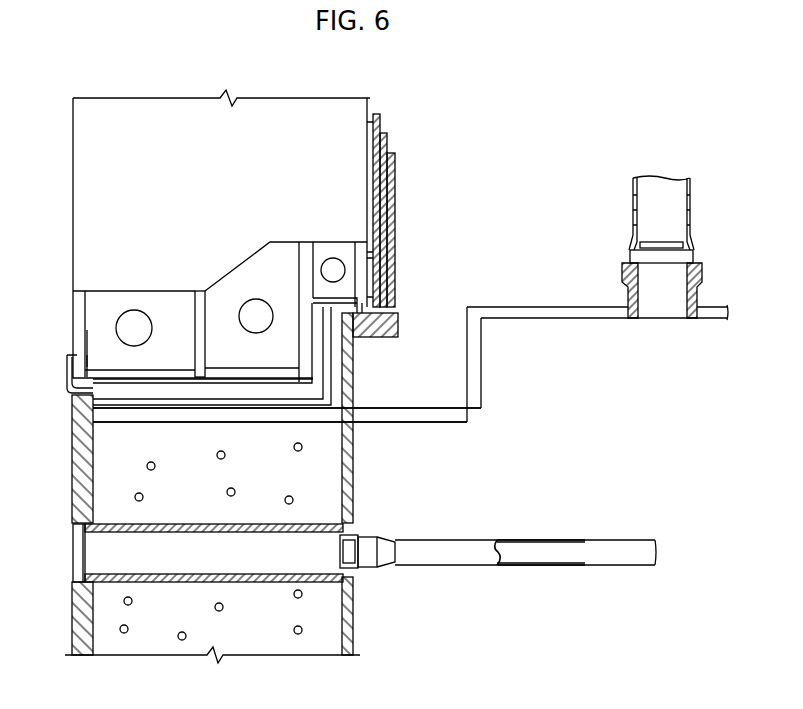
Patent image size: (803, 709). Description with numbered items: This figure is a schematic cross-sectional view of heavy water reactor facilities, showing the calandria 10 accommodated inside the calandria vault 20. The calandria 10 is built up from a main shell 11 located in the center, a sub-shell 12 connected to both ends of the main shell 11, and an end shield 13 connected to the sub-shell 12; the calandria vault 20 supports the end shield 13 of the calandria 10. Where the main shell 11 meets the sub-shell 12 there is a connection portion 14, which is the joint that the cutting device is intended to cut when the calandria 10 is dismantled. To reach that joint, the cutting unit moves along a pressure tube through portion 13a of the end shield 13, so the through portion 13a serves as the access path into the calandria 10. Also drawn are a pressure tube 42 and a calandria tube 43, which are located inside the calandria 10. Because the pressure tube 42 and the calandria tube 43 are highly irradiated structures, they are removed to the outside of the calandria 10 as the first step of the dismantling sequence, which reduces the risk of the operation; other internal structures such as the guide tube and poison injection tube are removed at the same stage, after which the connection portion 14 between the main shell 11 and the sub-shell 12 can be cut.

The calandria vault 20 is at (95, 168).
The calandria 10 is at (410, 316).
The main shell 11 is at (578, 308).
The connection portion 14 is at (473, 363).
The sub-shell 12 is at (437, 413).
The end shield 13 is at (368, 424).
The pressure tube through portion 13a is at (145, 577).
The calandria tube 43 is at (470, 565).
The pressure tube 42 is at (612, 565).